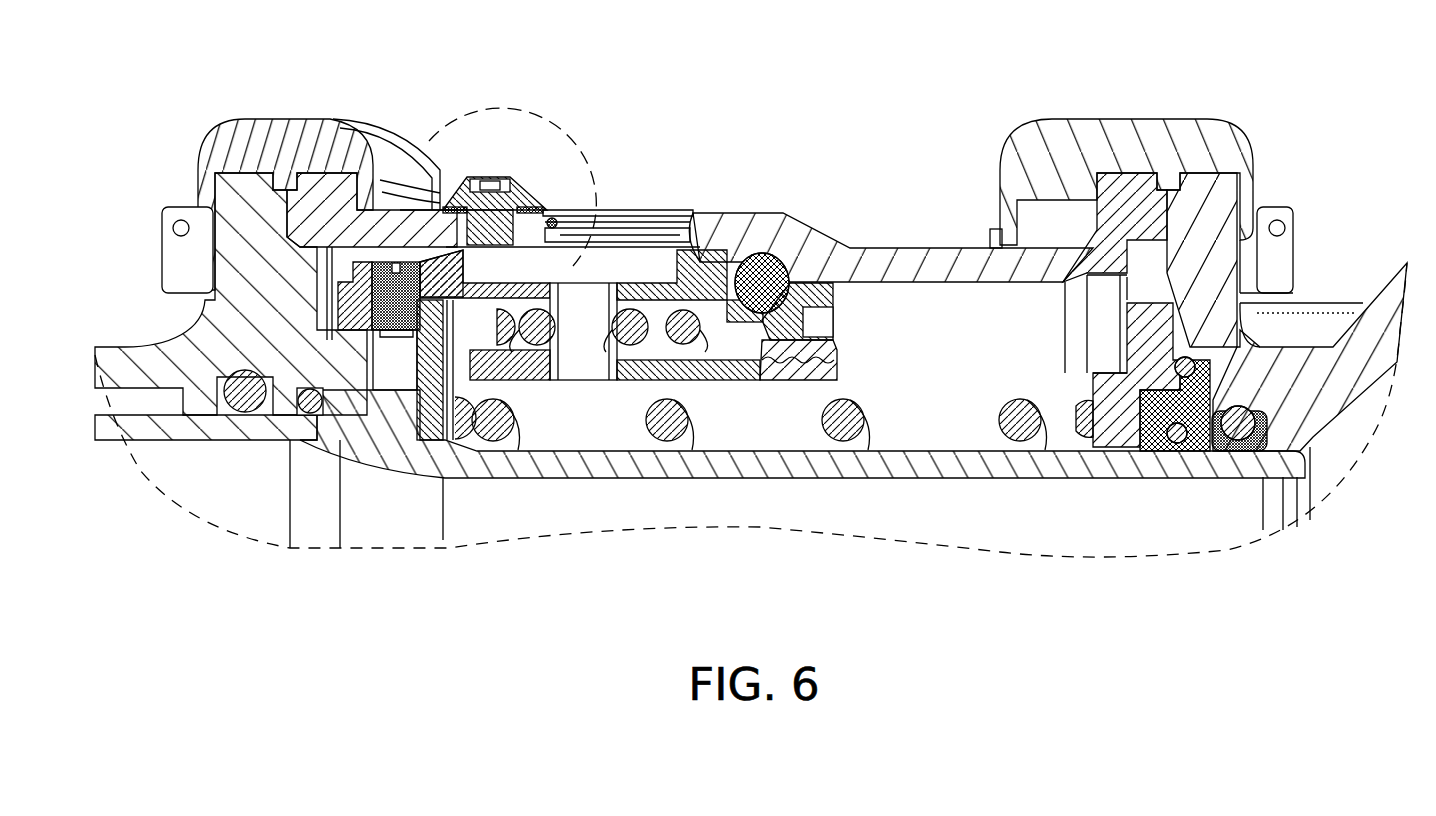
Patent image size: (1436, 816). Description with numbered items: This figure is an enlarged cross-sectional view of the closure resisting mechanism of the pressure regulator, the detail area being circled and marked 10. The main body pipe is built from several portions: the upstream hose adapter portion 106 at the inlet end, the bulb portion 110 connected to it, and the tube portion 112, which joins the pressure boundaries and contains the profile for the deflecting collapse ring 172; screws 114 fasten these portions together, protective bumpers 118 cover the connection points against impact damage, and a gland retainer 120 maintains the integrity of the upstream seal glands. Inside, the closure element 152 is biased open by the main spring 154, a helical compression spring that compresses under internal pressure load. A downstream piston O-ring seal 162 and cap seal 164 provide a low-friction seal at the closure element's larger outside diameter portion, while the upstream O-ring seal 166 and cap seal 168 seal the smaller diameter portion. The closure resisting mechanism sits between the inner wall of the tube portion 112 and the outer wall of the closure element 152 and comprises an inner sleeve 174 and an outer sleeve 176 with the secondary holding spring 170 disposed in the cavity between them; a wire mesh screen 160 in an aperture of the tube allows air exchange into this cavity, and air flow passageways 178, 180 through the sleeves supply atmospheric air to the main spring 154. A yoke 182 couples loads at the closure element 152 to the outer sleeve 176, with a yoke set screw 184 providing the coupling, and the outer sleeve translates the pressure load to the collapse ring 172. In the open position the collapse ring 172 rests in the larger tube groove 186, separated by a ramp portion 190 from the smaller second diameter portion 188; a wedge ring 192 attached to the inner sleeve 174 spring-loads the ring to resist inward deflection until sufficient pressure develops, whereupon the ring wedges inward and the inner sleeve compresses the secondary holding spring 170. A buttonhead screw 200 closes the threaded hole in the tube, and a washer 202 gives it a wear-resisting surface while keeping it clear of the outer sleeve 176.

The bearing assembly 10 is at (552, 108).
The hose adapter portion 106 is at (138, 349).
The bulb portion 110 is at (1378, 307).
The tube portion 112 is at (828, 245).
The screws 114 is at (172, 207).
The protective bumpers 118 is at (1079, 120).
The gland retainer 120 is at (1150, 312).
The closure element 152 is at (922, 455).
The main spring 154 is at (857, 400).
The screen 160 is at (640, 240).
The downstream piston O-ring seal 162 is at (240, 413).
The cap seal 164 is at (290, 412).
The upstream O-ring seal 166 is at (1250, 440).
The cap seal 168 is at (1233, 447).
The secondary holding spring 170 is at (688, 283).
The collapse ring 172 is at (757, 255).
The inner sleeve 174 is at (633, 385).
The outer sleeve 176 is at (652, 305).
The air flow passageway 178 is at (598, 373).
The air flow passageway 180 is at (580, 373).
The yoke 182 is at (430, 410).
The yoke set screw 184 is at (395, 292).
The tube groove 186 is at (735, 300).
The second diameter portion 188 is at (913, 294).
The ramp portion 190 is at (782, 300).
The wedge ring 192 is at (757, 382).
The buttonhead screw 200 is at (442, 208).
The washer 202 is at (532, 193).